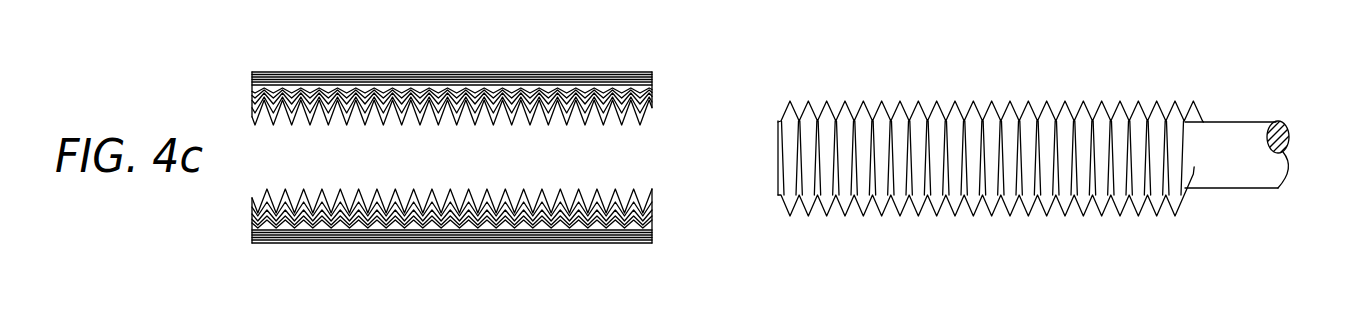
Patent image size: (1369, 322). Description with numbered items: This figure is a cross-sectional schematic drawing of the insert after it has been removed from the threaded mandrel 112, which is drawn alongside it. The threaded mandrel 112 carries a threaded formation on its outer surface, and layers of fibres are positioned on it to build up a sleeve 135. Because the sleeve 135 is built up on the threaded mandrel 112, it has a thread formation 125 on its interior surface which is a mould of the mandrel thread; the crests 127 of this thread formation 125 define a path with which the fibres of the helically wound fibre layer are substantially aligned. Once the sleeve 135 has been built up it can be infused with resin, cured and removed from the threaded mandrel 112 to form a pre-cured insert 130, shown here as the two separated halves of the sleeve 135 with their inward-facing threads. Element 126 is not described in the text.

The threaded mandrel 112 is at (1234, 190).
The thread formation 125 is at (452, 217).
The teeth of upper gripping plate 126 is at (645, 114).
The crests 127 is at (288, 192).
The pre-cured insert 130 is at (308, 244).
The sleeve 135 is at (480, 94).